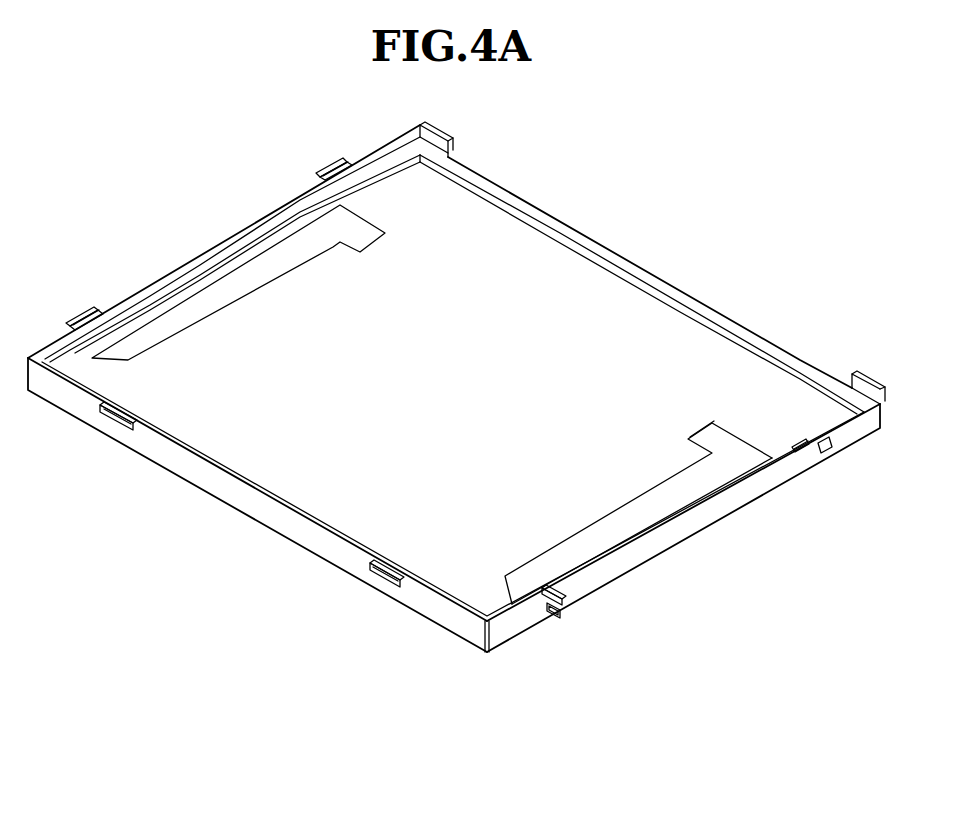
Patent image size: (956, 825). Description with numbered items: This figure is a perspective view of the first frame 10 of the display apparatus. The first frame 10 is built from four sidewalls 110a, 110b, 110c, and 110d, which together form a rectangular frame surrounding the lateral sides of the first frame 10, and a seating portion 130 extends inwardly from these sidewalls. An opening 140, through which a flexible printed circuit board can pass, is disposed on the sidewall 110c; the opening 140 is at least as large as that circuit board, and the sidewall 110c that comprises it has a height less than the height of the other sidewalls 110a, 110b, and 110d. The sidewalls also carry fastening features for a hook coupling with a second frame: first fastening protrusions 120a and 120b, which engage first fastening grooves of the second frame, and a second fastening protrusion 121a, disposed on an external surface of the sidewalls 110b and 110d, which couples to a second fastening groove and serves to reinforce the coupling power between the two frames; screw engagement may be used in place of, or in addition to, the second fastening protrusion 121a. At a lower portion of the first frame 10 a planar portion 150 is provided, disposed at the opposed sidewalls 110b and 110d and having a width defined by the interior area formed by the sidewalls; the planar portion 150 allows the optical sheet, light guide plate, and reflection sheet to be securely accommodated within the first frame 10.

The first frame 10 is at (501, 761).
The sidewall 110a is at (296, 518).
The sidewall 110b is at (626, 551).
The sidewall 110c is at (462, 124).
The sidewall 110d is at (284, 213).
The first fastening protrusion 120a is at (380, 578).
The first fastening protrusion 120b is at (560, 595).
The second fastening protrusion 121a is at (553, 613).
The seating portion 130 is at (400, 162).
The opening 140 is at (842, 373).
The planar portion 150 is at (681, 486).